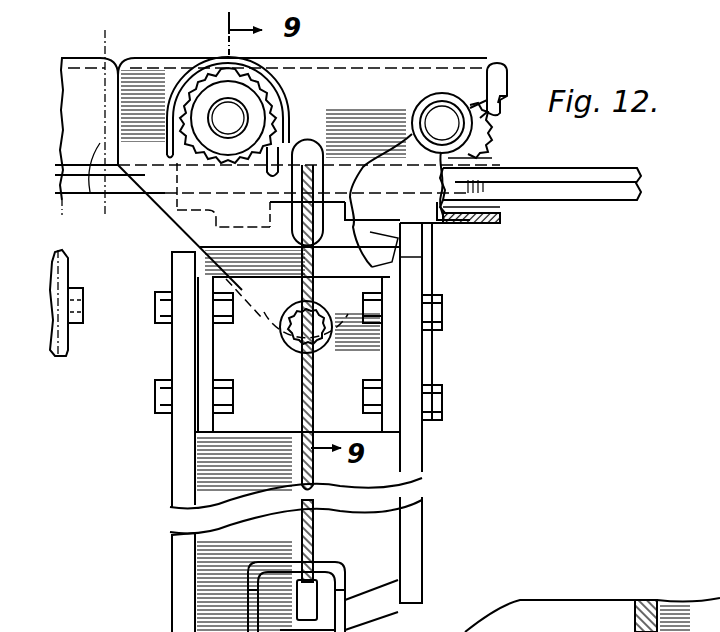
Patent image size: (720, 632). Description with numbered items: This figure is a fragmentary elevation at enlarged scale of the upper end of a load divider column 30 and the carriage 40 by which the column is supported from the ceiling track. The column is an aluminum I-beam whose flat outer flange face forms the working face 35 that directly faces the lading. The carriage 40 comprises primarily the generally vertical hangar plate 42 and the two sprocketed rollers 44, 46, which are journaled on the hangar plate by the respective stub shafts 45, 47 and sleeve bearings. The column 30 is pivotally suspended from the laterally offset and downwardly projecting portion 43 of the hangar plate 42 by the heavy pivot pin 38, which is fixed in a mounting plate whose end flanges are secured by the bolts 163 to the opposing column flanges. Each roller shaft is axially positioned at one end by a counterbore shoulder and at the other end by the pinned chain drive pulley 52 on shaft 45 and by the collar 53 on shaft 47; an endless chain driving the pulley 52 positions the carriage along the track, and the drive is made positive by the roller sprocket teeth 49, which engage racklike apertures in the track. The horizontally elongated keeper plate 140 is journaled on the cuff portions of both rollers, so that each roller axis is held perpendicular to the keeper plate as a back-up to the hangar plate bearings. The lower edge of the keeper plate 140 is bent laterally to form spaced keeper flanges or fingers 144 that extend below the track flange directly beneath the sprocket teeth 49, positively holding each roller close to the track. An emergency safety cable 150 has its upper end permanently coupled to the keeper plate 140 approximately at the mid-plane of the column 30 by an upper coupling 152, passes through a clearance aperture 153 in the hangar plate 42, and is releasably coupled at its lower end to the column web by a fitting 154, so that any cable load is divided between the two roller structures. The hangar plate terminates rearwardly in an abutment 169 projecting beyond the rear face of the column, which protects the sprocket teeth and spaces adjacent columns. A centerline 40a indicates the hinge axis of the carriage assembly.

The column 30 is at (432, 358).
The working face 35 is at (422, 450).
The pivot pin 38 is at (297, 338).
The carriage 40 is at (502, 231).
The hinge centerline 40a is at (101, 52).
The hangar plate 42 is at (512, 70).
The downwardly projecting portion of hangar plate 43 is at (400, 263).
The sprocketed roller 44 is at (217, 230).
The stub shaft 45 is at (238, 118).
The sprocketed roller 46 is at (490, 70).
The stub shaft 47 is at (425, 118).
The roller sprocket teeth 49 is at (490, 154).
The pulley 52 is at (219, 97).
The collar 53 is at (445, 98).
The keeper plate 140 is at (510, 102).
The keeper flange 144 is at (496, 206).
The emergency safety cable 150 is at (316, 352).
The pivot housing 152 is at (324, 187).
The clearance aperture 153 is at (398, 238).
The fitting 154 is at (398, 580).
The bolts 163 is at (438, 401).
The abutment 169 is at (116, 167).